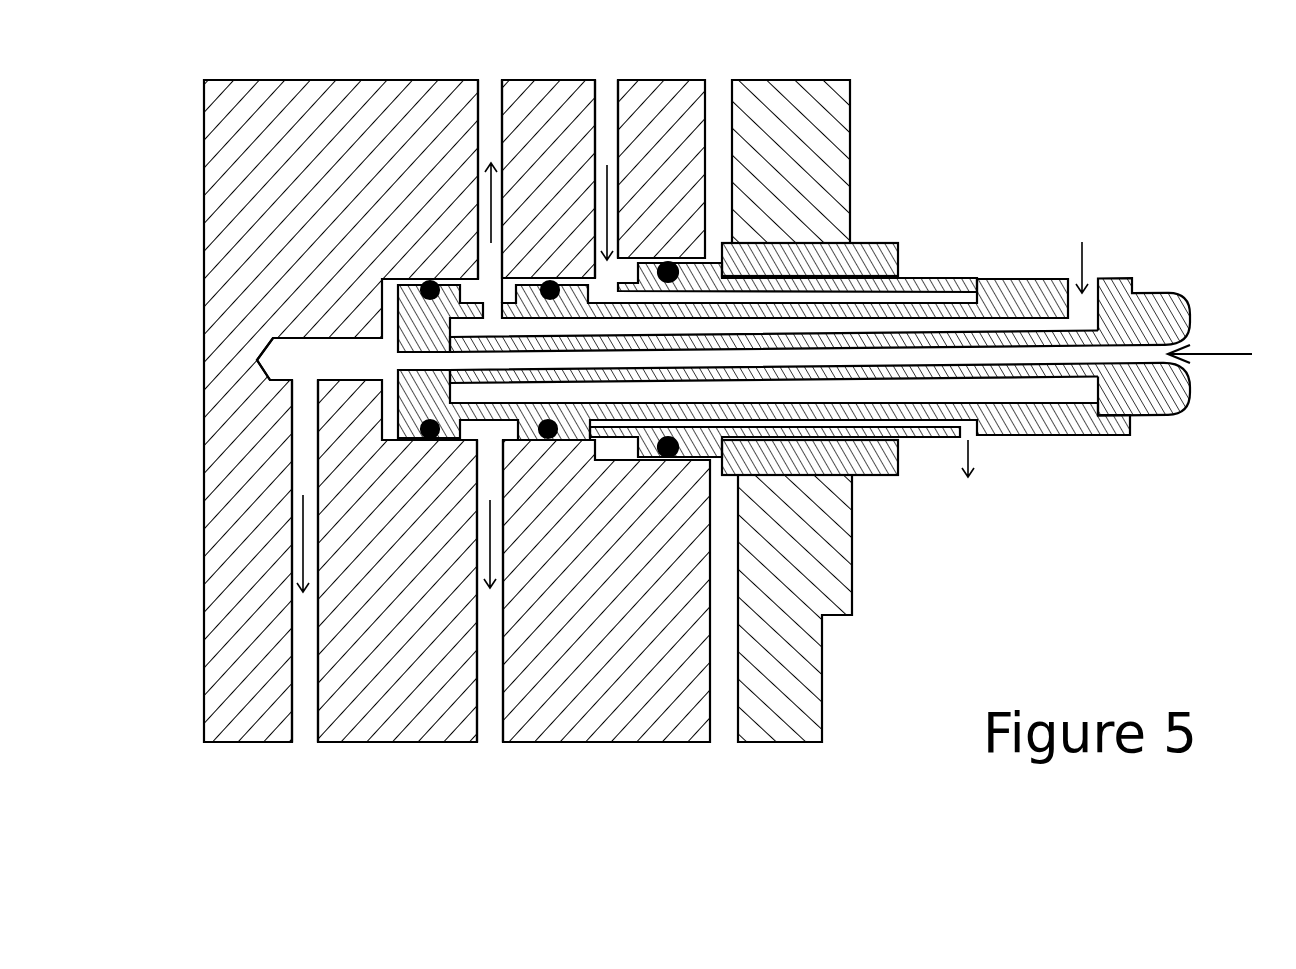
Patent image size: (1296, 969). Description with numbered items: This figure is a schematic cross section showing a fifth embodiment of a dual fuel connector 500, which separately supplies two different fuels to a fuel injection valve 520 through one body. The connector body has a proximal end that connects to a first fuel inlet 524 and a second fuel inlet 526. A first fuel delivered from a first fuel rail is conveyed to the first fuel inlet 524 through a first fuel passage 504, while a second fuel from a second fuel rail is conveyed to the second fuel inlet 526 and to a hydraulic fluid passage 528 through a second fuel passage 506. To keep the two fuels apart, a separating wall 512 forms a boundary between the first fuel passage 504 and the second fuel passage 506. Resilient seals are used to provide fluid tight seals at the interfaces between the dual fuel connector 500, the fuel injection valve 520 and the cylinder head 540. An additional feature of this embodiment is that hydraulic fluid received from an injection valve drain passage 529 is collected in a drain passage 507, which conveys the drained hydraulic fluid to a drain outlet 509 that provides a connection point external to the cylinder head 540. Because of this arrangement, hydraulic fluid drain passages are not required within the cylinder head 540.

The dual fuel connector 500 is at (1133, 290).
The first fuel passage 504 is at (977, 355).
The second fuel passage 506 is at (1017, 390).
The drain passage 507 is at (899, 278).
The drain outlet 509 is at (968, 432).
The separating wall 512 is at (993, 373).
The fuel injection valve 520 is at (330, 270).
The first fuel inlet 524 is at (337, 363).
The second fuel inlet 526 is at (495, 715).
The hydraulic fluid passage 528 is at (490, 112).
The injection valve drain passage 529 is at (607, 120).
The cylinder head 540 is at (773, 607).